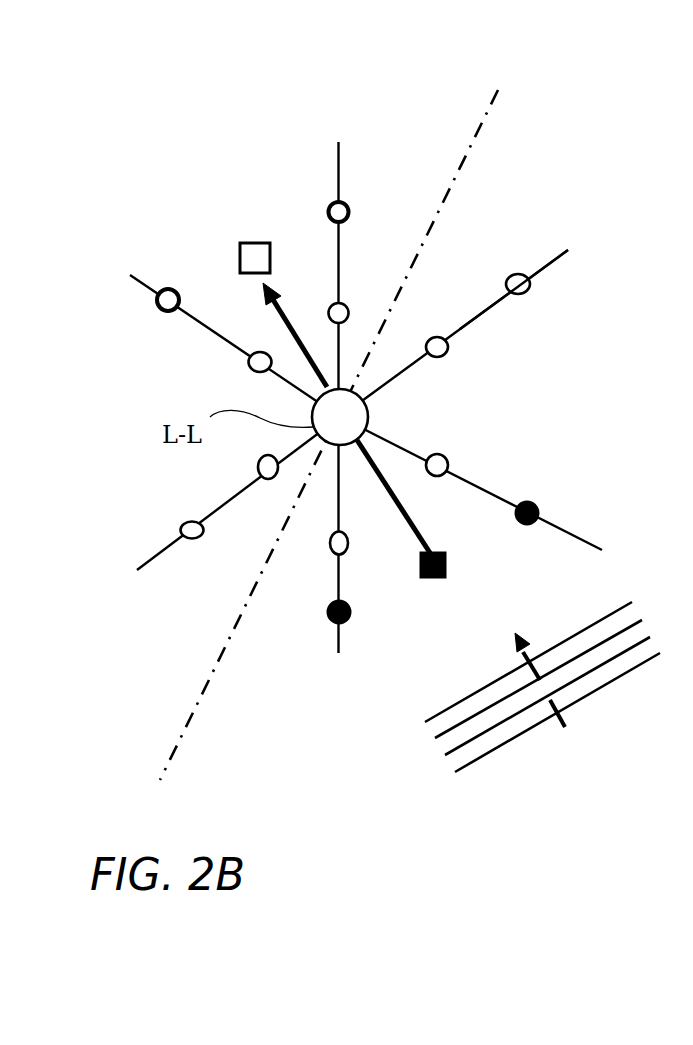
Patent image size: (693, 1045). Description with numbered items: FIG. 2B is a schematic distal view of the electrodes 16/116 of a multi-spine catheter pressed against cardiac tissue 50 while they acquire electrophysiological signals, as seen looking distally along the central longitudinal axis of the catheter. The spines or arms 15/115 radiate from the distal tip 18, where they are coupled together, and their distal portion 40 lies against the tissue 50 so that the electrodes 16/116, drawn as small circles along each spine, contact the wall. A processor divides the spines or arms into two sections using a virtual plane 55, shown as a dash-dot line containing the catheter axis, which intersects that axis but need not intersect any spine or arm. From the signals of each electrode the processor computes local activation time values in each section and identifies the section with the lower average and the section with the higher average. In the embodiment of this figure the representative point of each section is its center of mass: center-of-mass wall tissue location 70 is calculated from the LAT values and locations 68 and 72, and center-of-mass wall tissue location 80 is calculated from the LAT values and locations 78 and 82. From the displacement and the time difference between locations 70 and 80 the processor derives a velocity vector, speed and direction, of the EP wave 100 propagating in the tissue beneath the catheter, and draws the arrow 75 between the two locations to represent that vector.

The tissue 50 is at (234, 144).
The virtual plane 55 is at (460, 168).
The distal tip 18 is at (354, 429).
The location 82 is at (328, 212).
The center-of-mass wall tissue location 80 is at (240, 257).
The location 78 is at (168, 312).
The electrode 16 is at (495, 265).
The electrode 116 is at (445, 338).
The spine or arm 15 is at (569, 290).
The spine or arm 115 is at (488, 310).
The distal portion 40 is at (590, 375).
The location 68 is at (532, 500).
The arrow 75 is at (410, 518).
The center-of-mass wall tissue location 70 is at (436, 580).
The location 72 is at (352, 615).
The EP wave 100 is at (652, 795).